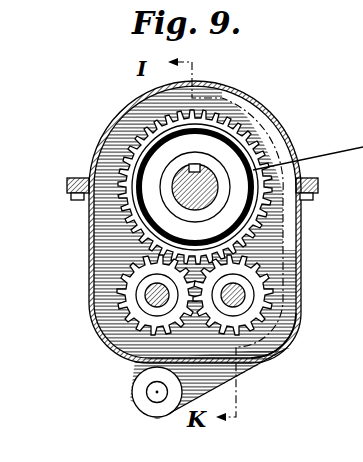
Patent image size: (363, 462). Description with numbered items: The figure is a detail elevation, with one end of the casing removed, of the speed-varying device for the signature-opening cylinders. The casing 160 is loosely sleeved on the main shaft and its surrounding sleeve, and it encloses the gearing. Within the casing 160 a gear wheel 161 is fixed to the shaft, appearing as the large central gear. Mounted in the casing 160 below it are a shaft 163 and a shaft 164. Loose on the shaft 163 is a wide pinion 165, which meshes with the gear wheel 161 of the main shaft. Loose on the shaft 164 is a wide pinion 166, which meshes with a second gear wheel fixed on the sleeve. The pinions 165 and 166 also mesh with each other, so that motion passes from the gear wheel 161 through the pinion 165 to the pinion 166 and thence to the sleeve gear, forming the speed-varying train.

The casing 160 is at (268, 105).
The gear wheel 161 is at (206, 189).
The shaft 163 is at (146, 298).
The shaft 164 is at (246, 292).
The wide pinion 165 is at (156, 320).
The wide pinion 166 is at (272, 328).